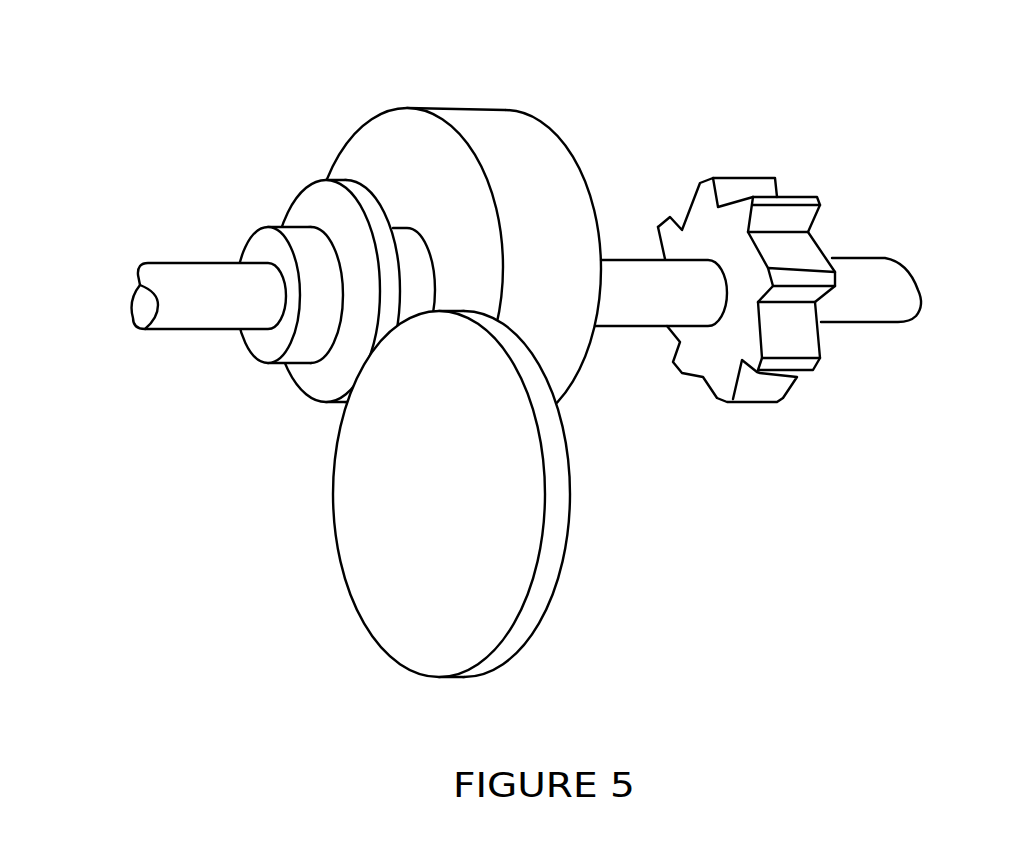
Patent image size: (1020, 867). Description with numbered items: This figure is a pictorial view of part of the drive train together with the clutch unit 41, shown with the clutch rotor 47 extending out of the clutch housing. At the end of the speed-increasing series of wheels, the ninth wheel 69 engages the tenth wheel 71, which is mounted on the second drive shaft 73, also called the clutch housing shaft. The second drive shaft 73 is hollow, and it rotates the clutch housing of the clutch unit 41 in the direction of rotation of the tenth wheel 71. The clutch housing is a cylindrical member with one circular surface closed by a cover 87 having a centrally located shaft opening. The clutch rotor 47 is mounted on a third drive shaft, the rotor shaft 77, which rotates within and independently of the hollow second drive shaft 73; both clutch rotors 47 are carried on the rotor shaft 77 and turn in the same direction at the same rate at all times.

The clutch unit 41 is at (540, 153).
The clutch rotor 47 is at (802, 192).
The ninth wheel 69 is at (345, 497).
The tenth wheel 71 is at (293, 395).
The second drive shaft 73 is at (290, 227).
The rotor shaft 77 is at (157, 253).
The cover 87 is at (393, 133).